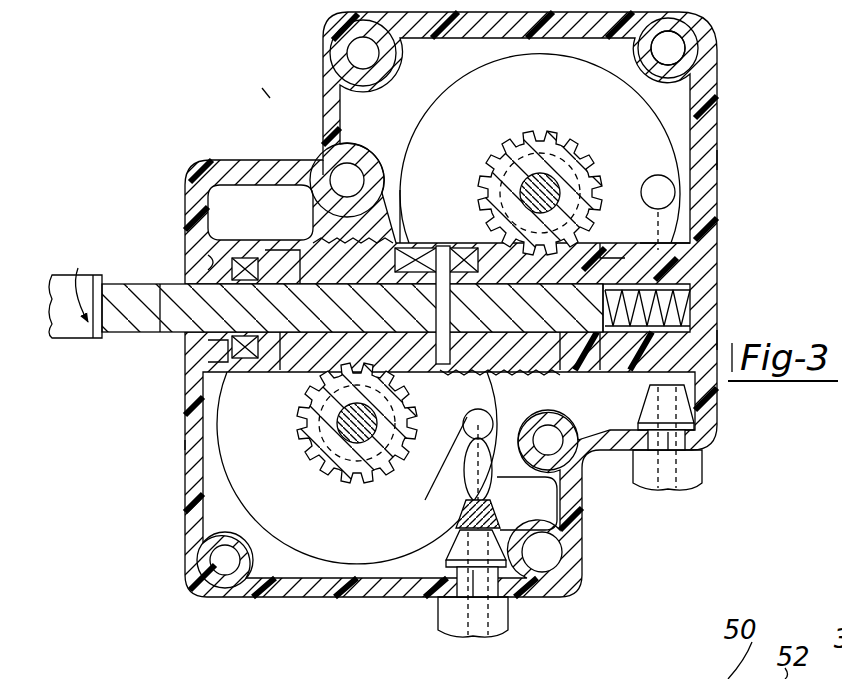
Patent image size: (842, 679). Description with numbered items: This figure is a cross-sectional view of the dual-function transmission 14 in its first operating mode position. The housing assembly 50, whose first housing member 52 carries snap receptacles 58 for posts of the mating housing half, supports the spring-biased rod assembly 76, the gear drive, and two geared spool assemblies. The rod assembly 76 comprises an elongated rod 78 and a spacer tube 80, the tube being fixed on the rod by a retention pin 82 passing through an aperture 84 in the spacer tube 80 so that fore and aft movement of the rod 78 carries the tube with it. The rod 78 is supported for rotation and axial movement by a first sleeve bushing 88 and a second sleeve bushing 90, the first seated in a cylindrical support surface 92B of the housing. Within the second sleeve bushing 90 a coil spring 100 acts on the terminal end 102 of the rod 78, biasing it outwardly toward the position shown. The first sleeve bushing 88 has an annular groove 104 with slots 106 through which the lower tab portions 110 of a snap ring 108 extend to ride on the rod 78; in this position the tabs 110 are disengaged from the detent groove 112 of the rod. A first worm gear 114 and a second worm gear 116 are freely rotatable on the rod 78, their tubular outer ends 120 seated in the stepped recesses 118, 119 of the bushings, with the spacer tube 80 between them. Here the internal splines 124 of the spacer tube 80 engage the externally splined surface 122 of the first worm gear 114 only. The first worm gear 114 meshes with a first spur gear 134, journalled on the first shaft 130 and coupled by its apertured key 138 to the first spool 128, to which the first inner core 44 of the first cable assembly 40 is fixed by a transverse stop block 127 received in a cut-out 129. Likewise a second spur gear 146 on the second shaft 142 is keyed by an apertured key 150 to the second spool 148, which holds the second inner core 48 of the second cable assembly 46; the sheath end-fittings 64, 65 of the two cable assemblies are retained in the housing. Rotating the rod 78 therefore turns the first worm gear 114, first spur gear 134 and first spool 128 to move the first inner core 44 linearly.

The transmission 14 is at (263, 86).
The first cable assembly 40 is at (433, 625).
The first inner core 44 is at (488, 520).
The second cable assembly 46 is at (718, 472).
The second inner core 48 is at (718, 340).
The housing assembly 50 is at (745, 97).
The first housing member 52 is at (712, 160).
The snap receptacles 58 is at (695, 58).
The sheath end-fitting 64 is at (497, 553).
The sheath end-fitting 65 is at (683, 407).
The spring-biased rod assembly 76 is at (143, 272).
The elongated rod 78 is at (133, 337).
The spacer tube 80 is at (416, 246).
The retention pin 82 is at (450, 322).
The aperture 84 is at (417, 477).
The first tubular sleeve bushing 88 is at (205, 262).
The second tubular sleeve bushing 90 is at (690, 265).
The cylindrical support surface 92B is at (186, 445).
The coil spring 100 is at (678, 305).
The terminal end 102 is at (600, 300).
The annular groove 104 is at (243, 258).
The slots 106 is at (268, 265).
The snap ring 108 is at (210, 362).
The lower tab portions 110 is at (248, 332).
The detent groove 112 is at (163, 335).
The first worm gear 114 is at (388, 244).
The second worm gear 116 is at (560, 366).
The radially outwardly stepped recess 118 is at (283, 372).
The radially outwardly stepped recess 119 is at (608, 265).
The tubular outer ends 120 is at (322, 165).
The externally splined surface 122 is at (495, 367).
The internal splines 124 is at (460, 250).
The transverse stop block 127 is at (676, 192).
The first spool member 128 is at (295, 560).
The cut-out 129 is at (465, 432).
The first shaft 130 is at (330, 427).
The first spur gear 134 is at (368, 473).
The apertured key 138 is at (322, 470).
The second shaft 142 is at (568, 158).
The second spur gear 146 is at (545, 133).
The second spool 148 is at (413, 137).
The apertured key 150 is at (500, 133).